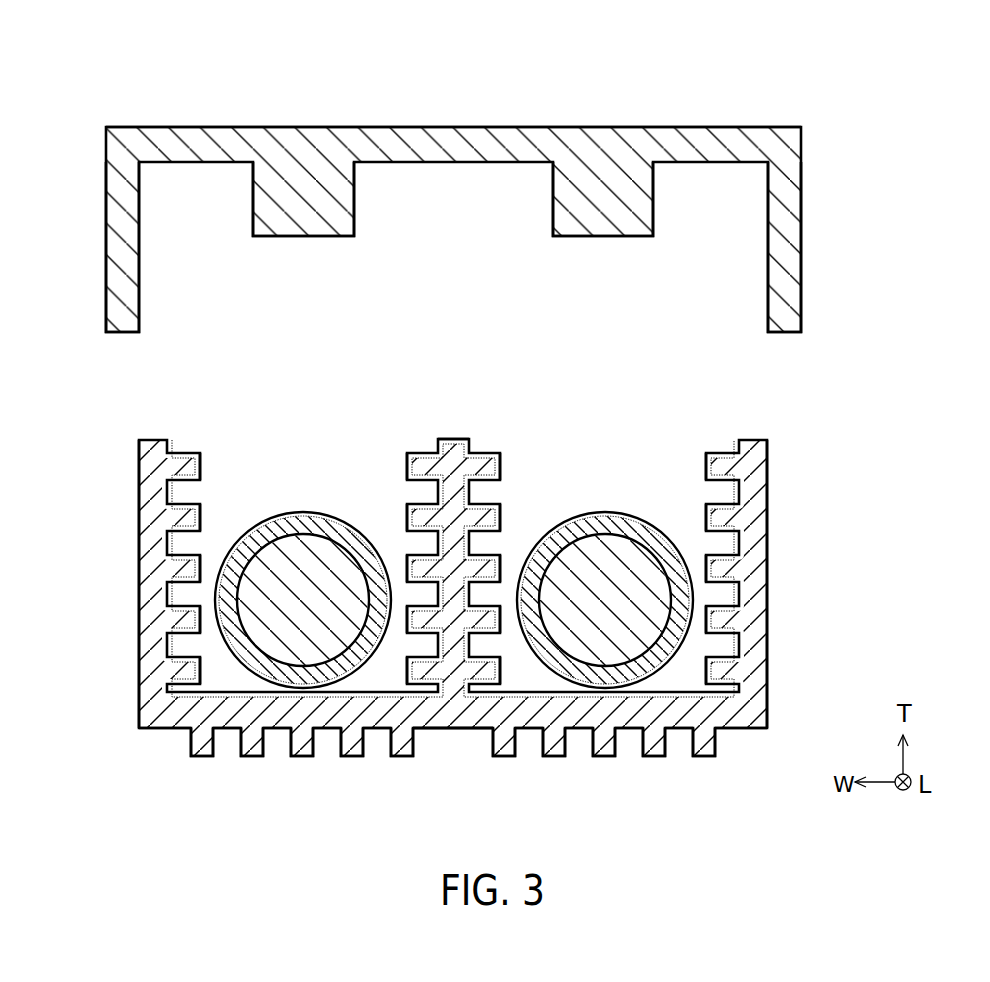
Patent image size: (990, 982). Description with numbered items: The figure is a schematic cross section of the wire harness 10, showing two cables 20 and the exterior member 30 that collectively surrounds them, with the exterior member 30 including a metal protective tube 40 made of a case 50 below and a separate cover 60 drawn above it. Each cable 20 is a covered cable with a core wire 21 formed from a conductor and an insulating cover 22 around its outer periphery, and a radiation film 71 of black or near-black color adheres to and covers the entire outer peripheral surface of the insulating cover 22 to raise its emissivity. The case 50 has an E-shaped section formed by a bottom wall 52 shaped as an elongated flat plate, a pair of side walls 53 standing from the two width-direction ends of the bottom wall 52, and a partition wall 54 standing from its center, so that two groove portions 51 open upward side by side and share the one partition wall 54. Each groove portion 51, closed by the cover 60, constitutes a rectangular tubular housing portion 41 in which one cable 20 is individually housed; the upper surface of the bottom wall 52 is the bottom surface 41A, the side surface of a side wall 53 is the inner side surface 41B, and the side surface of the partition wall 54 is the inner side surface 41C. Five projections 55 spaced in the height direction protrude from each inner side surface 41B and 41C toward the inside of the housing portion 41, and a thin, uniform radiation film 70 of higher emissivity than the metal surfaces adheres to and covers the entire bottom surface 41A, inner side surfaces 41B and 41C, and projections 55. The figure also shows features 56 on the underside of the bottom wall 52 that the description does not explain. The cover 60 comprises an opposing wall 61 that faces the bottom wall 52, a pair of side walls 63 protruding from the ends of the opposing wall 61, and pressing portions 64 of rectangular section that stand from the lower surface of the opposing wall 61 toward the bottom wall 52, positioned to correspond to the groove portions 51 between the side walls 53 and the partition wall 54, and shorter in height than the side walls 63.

The wire harness 10 is at (843, 73).
The cable 20 is at (448, 665).
The core wire 21 is at (290, 645).
The insulating cover 22 is at (232, 684).
The exterior member 30 is at (537, 473).
The protective tube 40 is at (880, 276).
The housing portion 41 is at (282, 455).
The bottom surface 41A is at (384, 690).
The inner side surface 41B is at (177, 447).
The inner side surface 41C is at (427, 447).
The case 50 is at (768, 482).
The groove portion 51 is at (190, 694).
The bottom wall 52 is at (462, 723).
The side wall 53 is at (155, 440).
The partition wall 54 is at (454, 440).
The projection 55 is at (201, 512).
The leg 56 is at (352, 758).
The cover 60 is at (802, 286).
The opposing wall 61 is at (246, 128).
The side wall 63 is at (134, 300).
The pressing portion 64 is at (285, 230).
The radiation film 70 is at (176, 548).
The radiation film 71 is at (329, 514).